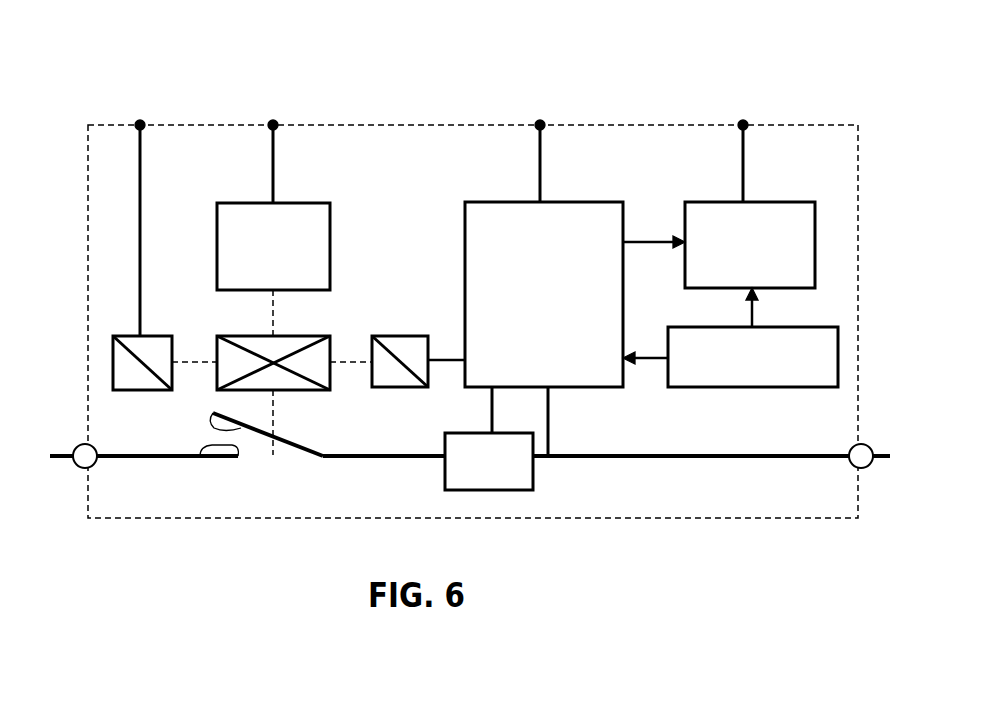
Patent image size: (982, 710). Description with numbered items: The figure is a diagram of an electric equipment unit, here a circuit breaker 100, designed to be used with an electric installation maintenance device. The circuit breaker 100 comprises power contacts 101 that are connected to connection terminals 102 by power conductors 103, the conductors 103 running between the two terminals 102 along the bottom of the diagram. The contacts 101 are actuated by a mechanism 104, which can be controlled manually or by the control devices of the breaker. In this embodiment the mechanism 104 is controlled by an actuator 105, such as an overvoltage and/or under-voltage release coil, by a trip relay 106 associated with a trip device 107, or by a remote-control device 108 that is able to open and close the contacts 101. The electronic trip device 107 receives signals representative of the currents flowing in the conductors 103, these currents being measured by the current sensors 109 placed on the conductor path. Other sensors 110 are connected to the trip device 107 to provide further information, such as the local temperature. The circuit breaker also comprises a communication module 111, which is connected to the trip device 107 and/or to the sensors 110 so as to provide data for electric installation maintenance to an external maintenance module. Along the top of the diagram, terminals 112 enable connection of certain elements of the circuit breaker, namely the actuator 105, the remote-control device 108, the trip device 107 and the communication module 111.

The circuit breaker 100 is at (695, 518).
The power contacts 101 is at (248, 428).
The connection terminals 102 is at (80, 468).
The power conductors 103 is at (152, 458).
The mechanism 104 is at (337, 375).
The actuator 105 is at (112, 358).
The trip relay 106 is at (408, 340).
The trip device 107 is at (507, 205).
The remote-control device 108 is at (325, 203).
The current sensors 109 is at (515, 490).
The sensors 110 is at (712, 387).
The communication module 111 is at (708, 205).
The terminals 112 is at (531, 110).